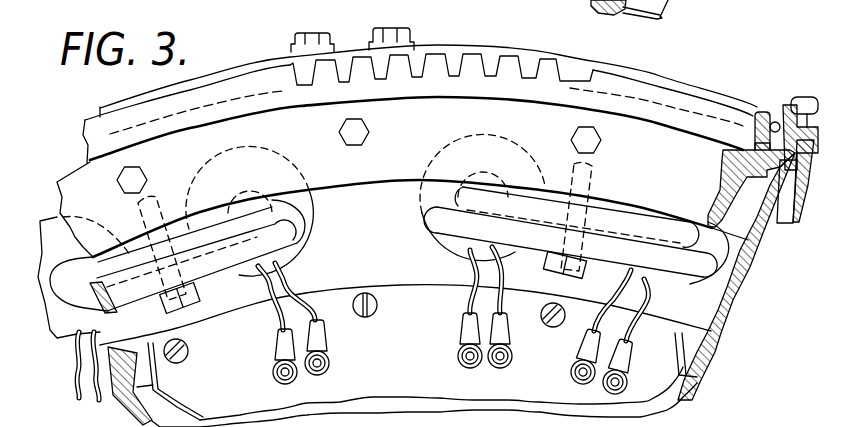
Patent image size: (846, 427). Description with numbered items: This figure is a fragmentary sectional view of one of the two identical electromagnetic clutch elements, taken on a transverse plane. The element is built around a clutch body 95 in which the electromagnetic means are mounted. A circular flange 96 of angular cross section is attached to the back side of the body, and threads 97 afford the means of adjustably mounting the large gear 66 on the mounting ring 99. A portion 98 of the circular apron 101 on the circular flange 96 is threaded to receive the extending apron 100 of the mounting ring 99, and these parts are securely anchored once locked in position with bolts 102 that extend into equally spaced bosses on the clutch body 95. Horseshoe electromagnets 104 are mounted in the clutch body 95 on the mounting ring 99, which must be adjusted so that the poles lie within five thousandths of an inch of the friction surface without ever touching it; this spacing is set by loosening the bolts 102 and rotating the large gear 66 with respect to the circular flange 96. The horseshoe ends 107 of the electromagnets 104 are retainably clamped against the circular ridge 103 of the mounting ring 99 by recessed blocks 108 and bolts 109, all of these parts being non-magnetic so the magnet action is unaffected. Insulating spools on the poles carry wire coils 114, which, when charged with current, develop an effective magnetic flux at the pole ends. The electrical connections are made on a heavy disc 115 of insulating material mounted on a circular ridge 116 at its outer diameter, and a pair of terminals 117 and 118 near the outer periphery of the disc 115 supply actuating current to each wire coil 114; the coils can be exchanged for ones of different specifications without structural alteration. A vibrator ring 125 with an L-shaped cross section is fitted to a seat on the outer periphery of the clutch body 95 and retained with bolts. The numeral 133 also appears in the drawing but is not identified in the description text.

The large gear 66 is at (590, 75).
The clutch body 95 is at (744, 293).
The circular flange 96 is at (487, 48).
The threads 97 is at (524, 103).
The threaded portion of the circular apron 98 is at (776, 108).
The mounting ring 99 is at (642, 130).
The extending apron 100 is at (756, 176).
The circular apron 101 is at (796, 96).
The bolts 102 is at (369, 130).
The circular ridge 103 is at (757, 250).
The horseshoe electromagnets 104 is at (310, 207).
The horseshoe ends 107 is at (185, 230).
The recessed blocks 108 is at (293, 242).
The bolts 109 is at (200, 295).
The wire coils 114 is at (63, 334).
The heavy disc of insulating material 115 is at (391, 290).
The circular ridge 116 is at (686, 350).
The terminal 117 is at (457, 350).
The terminal 118 is at (330, 362).
The vibrator ring 125 is at (791, 223).
The lock nut 133 is at (296, 36).